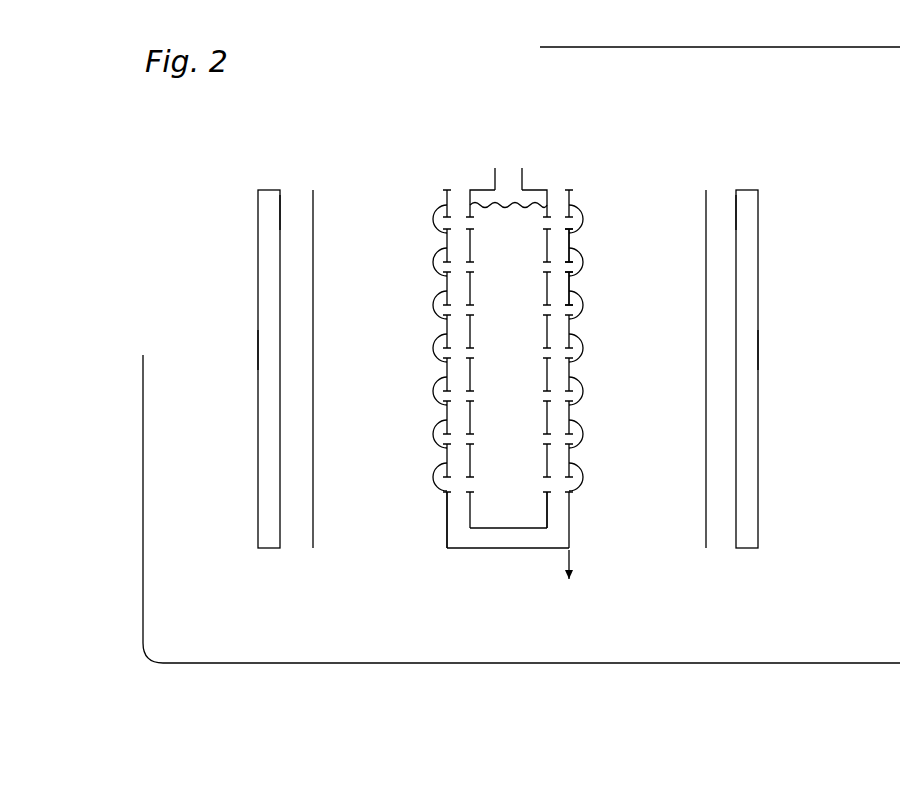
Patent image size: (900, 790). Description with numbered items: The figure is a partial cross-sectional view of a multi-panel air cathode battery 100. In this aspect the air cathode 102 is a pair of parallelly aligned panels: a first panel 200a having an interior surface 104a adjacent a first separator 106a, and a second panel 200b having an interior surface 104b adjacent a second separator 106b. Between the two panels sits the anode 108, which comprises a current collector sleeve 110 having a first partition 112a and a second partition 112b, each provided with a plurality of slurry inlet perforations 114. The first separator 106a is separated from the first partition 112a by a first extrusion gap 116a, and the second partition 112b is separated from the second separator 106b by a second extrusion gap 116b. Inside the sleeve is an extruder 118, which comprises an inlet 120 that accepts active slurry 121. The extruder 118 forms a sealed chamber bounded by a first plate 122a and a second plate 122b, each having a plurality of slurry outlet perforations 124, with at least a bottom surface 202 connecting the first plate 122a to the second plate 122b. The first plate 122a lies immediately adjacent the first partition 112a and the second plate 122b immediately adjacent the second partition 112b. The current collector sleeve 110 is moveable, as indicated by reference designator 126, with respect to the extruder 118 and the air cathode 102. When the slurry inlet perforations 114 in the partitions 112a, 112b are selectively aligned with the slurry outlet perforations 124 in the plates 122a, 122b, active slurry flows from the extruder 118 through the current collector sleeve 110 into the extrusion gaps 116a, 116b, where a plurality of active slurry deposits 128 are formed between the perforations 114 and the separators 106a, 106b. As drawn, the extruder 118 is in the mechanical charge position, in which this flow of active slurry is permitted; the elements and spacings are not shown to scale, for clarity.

The battery 100 is at (820, 97).
The air cathode 102 is at (802, 187).
The interior surface 104a is at (734, 207).
The interior surface 104b is at (282, 207).
The first separator 106a is at (705, 307).
The second separator 106b is at (312, 306).
The anode 108 is at (430, 201).
The current collector sleeve 110 is at (500, 548).
The first partition 112a is at (571, 533).
The second partition 112b is at (445, 502).
The slurry inlet perforations 114 is at (559, 211).
The first extrusion gap 116a is at (624, 390).
The second extrusion gap 116b is at (356, 390).
The extruder 118 is at (444, 395).
The inlet 120 is at (514, 162).
The active slurry 121 is at (498, 300).
The first plate 122a is at (545, 502).
The second plate 122b is at (469, 470).
The slurry outlet perforations 124 is at (555, 494).
The movement of current collector sleeve 126 is at (575, 575).
The active slurry deposits 128 is at (434, 398).
The first panel 200a is at (759, 348).
The second panel 200b is at (257, 348).
The bottom surface 202 is at (507, 528).